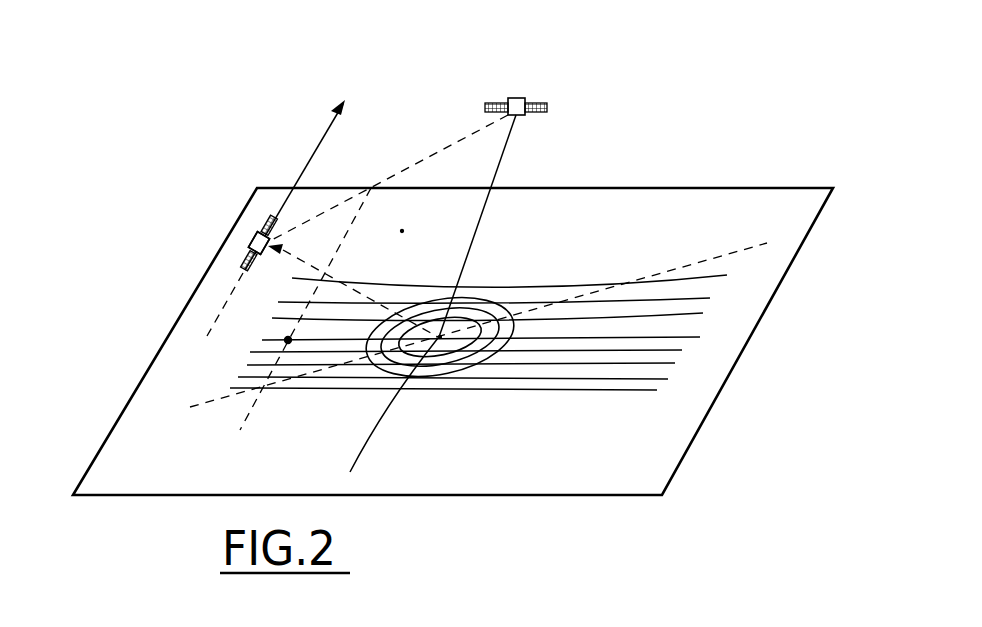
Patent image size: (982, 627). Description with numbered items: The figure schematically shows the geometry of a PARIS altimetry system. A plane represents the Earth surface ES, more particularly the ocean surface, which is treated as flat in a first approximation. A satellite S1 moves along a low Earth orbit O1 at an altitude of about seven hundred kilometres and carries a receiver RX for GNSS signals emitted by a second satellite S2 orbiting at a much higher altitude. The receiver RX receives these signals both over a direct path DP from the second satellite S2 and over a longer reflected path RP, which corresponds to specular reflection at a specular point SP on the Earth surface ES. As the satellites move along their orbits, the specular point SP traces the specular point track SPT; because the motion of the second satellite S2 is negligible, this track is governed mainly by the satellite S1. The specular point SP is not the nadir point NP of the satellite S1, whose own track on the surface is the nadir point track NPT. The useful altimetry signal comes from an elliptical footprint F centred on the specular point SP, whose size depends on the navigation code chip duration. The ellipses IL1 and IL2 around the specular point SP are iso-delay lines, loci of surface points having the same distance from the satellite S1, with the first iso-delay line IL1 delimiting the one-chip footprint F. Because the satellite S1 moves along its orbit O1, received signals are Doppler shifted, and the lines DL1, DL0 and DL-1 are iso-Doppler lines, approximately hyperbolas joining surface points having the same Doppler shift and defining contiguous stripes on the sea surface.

The LEO orbit O1 is at (320, 142).
The satellite S1 is at (256, 242).
The receiver RX is at (258, 248).
The second satellite S2 is at (526, 100).
The direct path DP is at (427, 161).
The reflected path RP is at (500, 157).
The Earth surface ES is at (720, 204).
The elliptical footprint F is at (432, 333).
The specular point SP is at (442, 336).
The first iso-delay line IL1 is at (481, 321).
The second iso-delay line IL2 is at (500, 313).
The iso-Doppler line DL1 is at (703, 313).
The iso-Doppler line DL0 is at (686, 337).
The iso-Doppler line DL-1 is at (682, 351).
The nadir point NP is at (288, 340).
The nadir point track NPT is at (245, 415).
The specular point track SPT is at (371, 444).